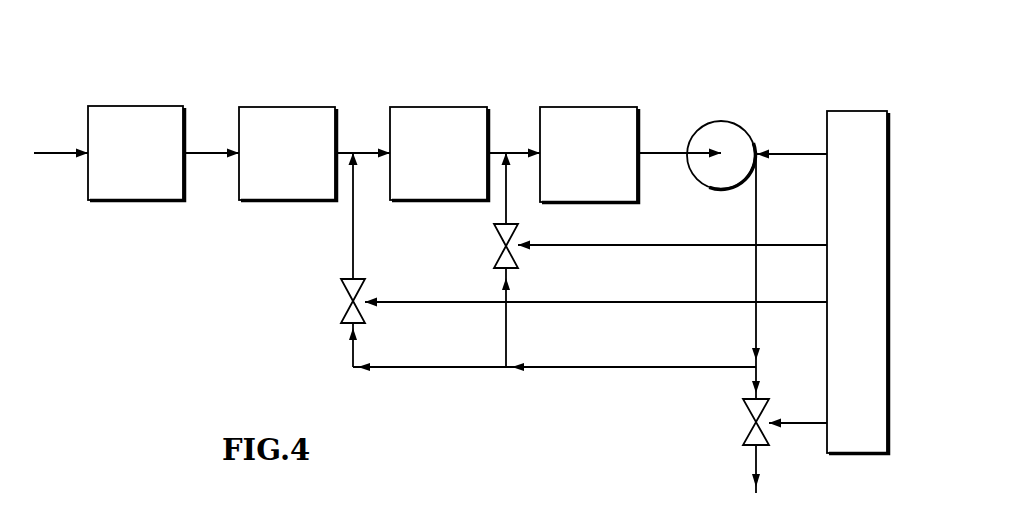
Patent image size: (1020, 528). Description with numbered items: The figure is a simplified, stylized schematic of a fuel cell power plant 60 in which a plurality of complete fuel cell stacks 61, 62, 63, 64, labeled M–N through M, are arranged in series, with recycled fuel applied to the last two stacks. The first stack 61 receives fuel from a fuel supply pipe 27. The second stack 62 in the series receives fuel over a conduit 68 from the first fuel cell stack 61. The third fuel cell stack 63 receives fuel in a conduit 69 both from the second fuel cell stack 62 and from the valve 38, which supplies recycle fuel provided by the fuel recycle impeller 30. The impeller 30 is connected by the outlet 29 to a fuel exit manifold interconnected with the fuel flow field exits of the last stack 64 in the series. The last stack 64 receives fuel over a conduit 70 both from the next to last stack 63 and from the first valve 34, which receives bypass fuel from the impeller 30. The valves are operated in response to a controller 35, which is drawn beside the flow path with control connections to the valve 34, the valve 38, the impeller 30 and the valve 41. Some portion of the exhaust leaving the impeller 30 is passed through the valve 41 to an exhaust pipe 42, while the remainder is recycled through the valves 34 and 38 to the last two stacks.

The fuel supply pipe 27 is at (43, 153).
The first fuel cell stack 61 is at (140, 106).
The conduit 68 is at (193, 153).
The second fuel cell stack 62 is at (290, 107).
The conduit 69 is at (350, 153).
The third fuel cell stack 63 is at (437, 107).
The conduit 70 is at (500, 153).
The last fuel cell stack 64 is at (590, 107).
The fuel cell power plant 60 is at (683, 91).
The outlet 29 is at (645, 154).
The fuel recycle impeller 30 is at (722, 121).
The controller 35 is at (850, 111).
The first valve 34 is at (497, 258).
The valve 38 is at (348, 304).
The valve 41 is at (747, 425).
The exhaust pipe 42 is at (758, 465).